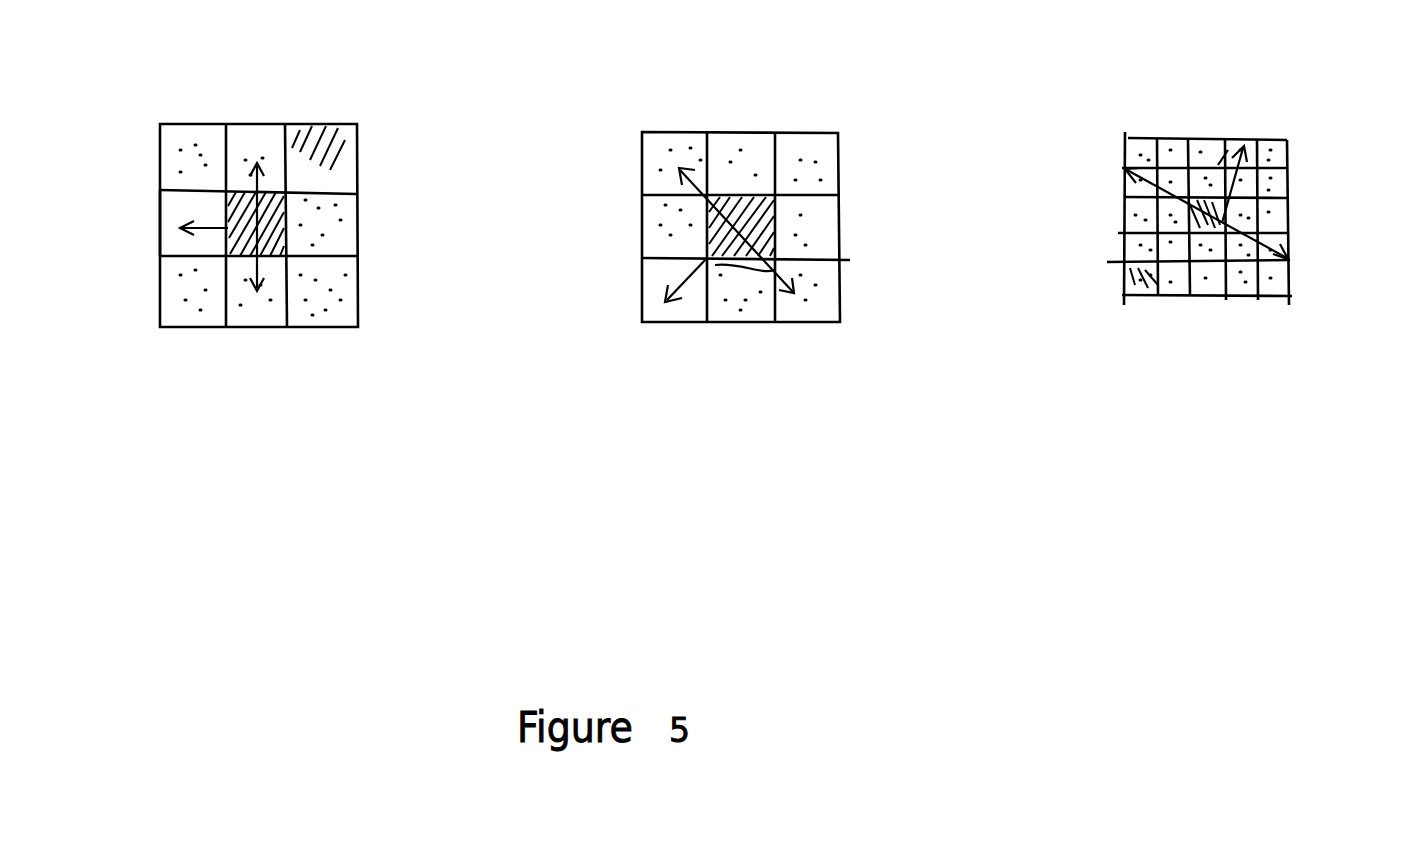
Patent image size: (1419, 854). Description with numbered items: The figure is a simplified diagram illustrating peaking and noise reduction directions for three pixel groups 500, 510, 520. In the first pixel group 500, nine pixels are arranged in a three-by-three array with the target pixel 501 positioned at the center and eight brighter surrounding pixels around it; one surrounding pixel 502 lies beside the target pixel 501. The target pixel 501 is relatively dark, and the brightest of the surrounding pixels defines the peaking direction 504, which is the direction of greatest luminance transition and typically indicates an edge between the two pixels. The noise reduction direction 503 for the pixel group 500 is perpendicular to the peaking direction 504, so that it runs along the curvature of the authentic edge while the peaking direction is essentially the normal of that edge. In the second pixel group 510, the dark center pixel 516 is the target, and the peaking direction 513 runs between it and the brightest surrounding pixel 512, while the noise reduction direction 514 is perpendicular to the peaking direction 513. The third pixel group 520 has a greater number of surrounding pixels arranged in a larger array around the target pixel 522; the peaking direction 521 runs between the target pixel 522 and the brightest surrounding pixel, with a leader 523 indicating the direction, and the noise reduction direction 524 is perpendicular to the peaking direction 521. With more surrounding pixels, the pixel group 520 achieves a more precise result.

The pixel group 500 is at (357, 327).
The target pixel 501 is at (357, 248).
The neighboring block 502 is at (160, 243).
The noise reduction direction 503 is at (258, 165).
The peaking direction 504 is at (183, 226).
The pixel group 510 is at (840, 322).
The pixel 512 is at (688, 312).
The peaking direction 513 is at (684, 298).
The noise reduction direction 514 is at (790, 278).
The center pixel block 516 is at (768, 210).
The pixel group 520 is at (1290, 178).
The peaking direction 521 is at (1246, 140).
The target pixel 522 is at (1228, 208).
The motion vector 523 is at (1220, 165).
The noise reduction direction 524 is at (1288, 258).